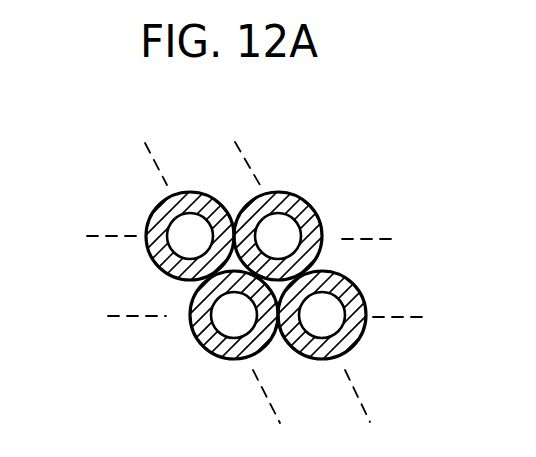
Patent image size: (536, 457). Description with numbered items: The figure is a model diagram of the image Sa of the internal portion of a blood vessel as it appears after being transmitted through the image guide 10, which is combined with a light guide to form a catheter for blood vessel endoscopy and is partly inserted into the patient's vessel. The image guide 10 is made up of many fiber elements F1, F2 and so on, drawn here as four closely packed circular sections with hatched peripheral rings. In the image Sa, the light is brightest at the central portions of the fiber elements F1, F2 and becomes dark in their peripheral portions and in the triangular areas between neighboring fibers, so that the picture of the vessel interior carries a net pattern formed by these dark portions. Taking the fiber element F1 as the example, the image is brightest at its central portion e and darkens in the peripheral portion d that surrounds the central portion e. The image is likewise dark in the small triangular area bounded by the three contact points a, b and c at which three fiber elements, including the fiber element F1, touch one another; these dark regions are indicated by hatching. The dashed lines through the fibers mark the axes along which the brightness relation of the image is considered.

The image guide 10 is at (253, 269).
The fiber element F1 is at (286, 236).
The fiber element F2 is at (353, 307).
The image of the internal portion of the blood vessel Sa is at (266, 152).
The contact point a is at (234, 315).
The contact point b is at (190, 236).
The contact point c is at (249, 280).
The peripheral portion d is at (244, 206).
The central portion e is at (278, 235).